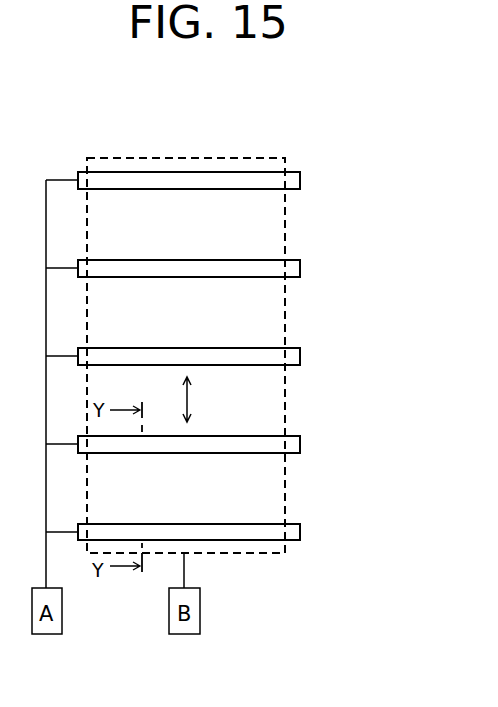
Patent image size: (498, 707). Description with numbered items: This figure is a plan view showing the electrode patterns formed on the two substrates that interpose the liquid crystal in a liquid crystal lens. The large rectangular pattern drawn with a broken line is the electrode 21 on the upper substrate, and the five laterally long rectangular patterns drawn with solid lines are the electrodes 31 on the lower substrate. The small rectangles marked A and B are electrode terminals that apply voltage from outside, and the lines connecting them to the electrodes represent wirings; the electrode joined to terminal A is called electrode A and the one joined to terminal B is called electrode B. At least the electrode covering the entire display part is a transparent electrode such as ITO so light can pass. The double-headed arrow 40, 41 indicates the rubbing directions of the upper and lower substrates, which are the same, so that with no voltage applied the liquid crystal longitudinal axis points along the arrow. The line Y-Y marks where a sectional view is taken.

The electrode 21 is at (221, 158).
The electrode 31 is at (300, 182).
The arrow 40 is at (188, 408).
The arrow 41 is at (303, 402).